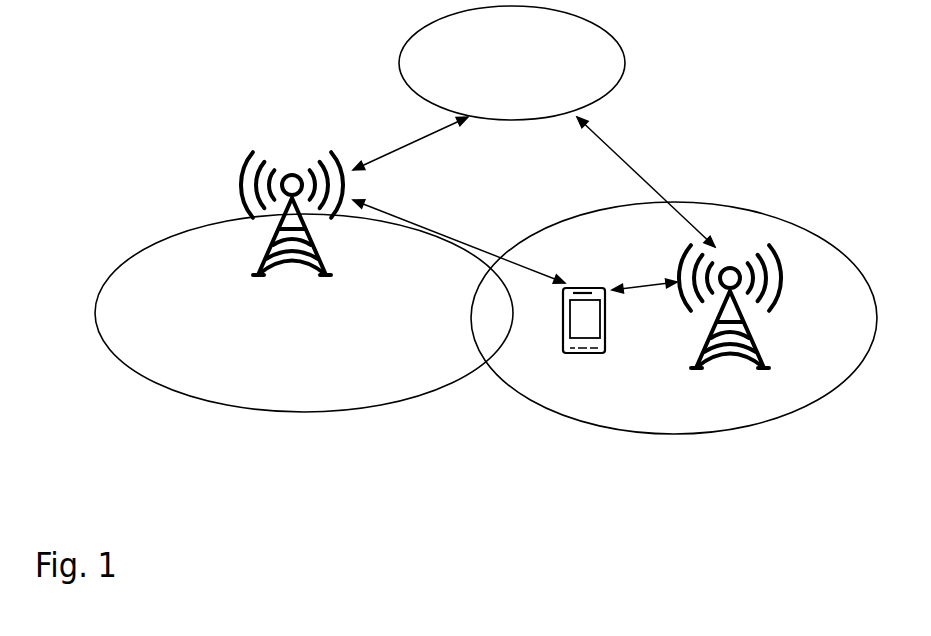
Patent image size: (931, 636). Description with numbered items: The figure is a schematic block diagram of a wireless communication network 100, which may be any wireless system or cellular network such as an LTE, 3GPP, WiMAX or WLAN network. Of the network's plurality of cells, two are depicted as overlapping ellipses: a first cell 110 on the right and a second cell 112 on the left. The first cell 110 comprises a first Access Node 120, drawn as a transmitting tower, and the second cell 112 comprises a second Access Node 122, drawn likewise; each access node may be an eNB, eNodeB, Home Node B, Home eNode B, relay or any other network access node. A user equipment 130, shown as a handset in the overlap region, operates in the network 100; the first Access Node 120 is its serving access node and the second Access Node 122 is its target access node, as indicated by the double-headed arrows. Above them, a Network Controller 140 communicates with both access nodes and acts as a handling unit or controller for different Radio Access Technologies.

The wireless communication network 100 is at (600, 535).
The first cell 110 is at (750, 408).
The second cell 112 is at (155, 260).
The first Access Node 120 is at (743, 342).
The second Access Node 122 is at (267, 265).
The user equipment 130 is at (563, 303).
The Network Controller 140 is at (512, 63).